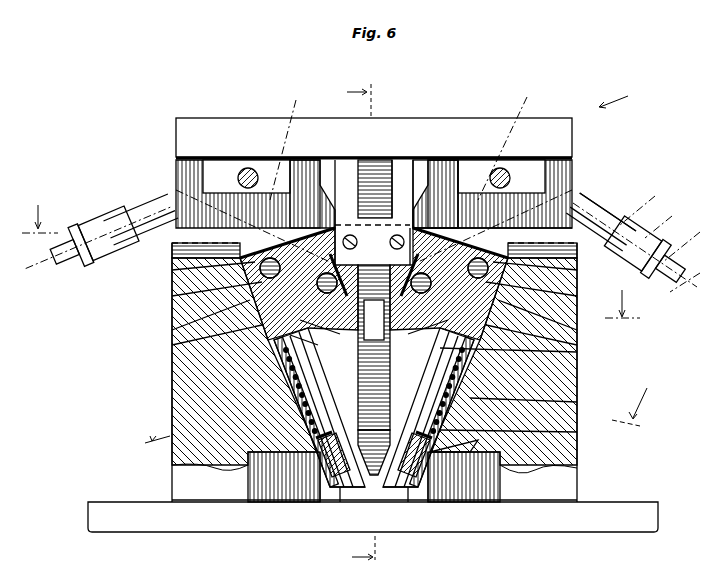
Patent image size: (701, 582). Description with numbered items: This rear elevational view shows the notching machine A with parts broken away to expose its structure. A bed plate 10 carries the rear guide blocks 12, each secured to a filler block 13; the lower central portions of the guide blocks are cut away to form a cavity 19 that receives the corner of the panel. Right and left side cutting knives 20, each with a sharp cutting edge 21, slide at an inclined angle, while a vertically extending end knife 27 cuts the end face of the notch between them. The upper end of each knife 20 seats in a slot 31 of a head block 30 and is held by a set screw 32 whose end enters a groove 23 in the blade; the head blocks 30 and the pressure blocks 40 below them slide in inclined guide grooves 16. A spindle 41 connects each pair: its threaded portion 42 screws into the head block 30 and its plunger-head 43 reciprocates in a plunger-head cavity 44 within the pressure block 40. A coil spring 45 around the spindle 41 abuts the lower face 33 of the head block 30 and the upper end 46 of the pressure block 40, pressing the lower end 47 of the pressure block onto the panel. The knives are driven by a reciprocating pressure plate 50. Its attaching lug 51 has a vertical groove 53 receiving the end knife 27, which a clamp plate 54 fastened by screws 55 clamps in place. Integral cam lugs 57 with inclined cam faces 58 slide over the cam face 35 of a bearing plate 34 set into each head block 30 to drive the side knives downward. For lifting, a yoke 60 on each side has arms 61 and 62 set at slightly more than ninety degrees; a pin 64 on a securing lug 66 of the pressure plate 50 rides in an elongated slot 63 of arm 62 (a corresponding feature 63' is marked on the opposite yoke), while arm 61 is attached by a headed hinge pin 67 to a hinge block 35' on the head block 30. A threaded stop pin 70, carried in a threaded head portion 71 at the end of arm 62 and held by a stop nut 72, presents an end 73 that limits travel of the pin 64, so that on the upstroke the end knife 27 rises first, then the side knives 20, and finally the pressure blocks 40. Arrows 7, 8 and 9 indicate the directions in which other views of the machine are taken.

The bed plate 10 is at (632, 533).
The rear guide block 12 is at (178, 312).
The filler block 13 is at (173, 376).
The inclined guide groove 16 is at (176, 270).
The cavity 19 is at (478, 498).
The side cutting knife 20 is at (320, 378).
The cutting edge 21 is at (352, 490).
The groove 23 is at (325, 341).
The end cutting knife 27 is at (374, 420).
The head block 30 is at (174, 296).
The slot 31 is at (174, 342).
The set screw 32 is at (322, 308).
The lower face 33 is at (330, 326).
The bearing plate 34 is at (252, 248).
The cam face 35 is at (374, 242).
The hinge block 35' is at (382, 264).
The pressure block 40 is at (306, 458).
The spindle 41 is at (577, 432).
The threaded portion 42 is at (577, 352).
The plunger-head 43 is at (455, 452).
The plunger-head cavity 44 is at (316, 474).
The coil spring 45 is at (577, 402).
The upper end 46 is at (583, 458).
The lower end 47 is at (338, 490).
The pressure plate 50 is at (343, 121).
The attaching lug 51 is at (401, 166).
The vertical groove 53 is at (381, 162).
The clamp plate 54 is at (366, 226).
The screws 55 is at (432, 224).
The cam lug 57 is at (176, 162).
The inclined cam face 58 is at (408, 198).
The yoke 60 is at (611, 198).
The yoke arm 61 is at (435, 194).
The slotted yoke arm 62 is at (644, 233).
The elongated slot 63 is at (400, 235).
The bore axis 63' is at (403, 141).
The pin 64 is at (249, 168).
The securing lug 66 is at (496, 162).
The headed hinge pin 67 is at (335, 262).
The threaded stop pin 70 is at (58, 272).
The threaded head portion 71 is at (98, 222).
The stop nut 72 is at (88, 272).
The stop end 73 is at (163, 198).
The section line 7 is at (331, 274).
The section line 8 is at (368, 322).
The section line 9 is at (391, 423).
The notching machine A is at (624, 97).